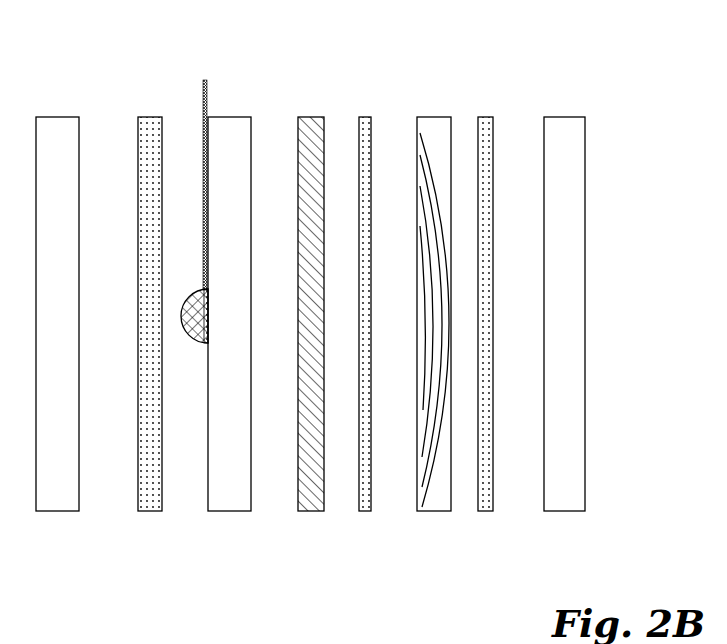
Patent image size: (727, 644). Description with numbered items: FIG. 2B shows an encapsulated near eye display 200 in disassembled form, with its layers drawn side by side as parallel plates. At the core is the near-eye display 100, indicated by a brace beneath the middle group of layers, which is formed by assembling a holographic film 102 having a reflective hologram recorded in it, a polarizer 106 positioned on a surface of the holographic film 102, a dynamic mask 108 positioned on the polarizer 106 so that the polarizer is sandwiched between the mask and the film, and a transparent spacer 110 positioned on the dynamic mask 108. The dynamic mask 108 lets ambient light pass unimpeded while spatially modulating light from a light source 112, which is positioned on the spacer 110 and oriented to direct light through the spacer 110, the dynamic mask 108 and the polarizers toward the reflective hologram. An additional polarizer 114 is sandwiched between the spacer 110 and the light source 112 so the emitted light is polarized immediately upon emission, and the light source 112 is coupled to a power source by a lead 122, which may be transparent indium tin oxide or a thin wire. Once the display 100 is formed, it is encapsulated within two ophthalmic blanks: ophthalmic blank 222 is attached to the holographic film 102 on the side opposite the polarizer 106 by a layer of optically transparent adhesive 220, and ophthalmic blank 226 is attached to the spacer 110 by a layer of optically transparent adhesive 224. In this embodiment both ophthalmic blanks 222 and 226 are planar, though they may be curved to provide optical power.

The encapsulated near eye display 200 is at (598, 89).
The ophthalmic blank 226 is at (57, 127).
The layer of optically transparent adhesive 224 is at (149, 501).
The lead 122 is at (202, 90).
The transparent spacer 110 is at (233, 131).
The light source 112 is at (190, 300).
The polarizer 114 is at (204, 346).
The dynamic mask 108 is at (313, 500).
The polarizer 106 is at (365, 118).
The holographic film 102 is at (442, 338).
The layer of optically transparent adhesive 220 is at (486, 126).
The ophthalmic blank 222 is at (564, 503).
The near-eye display 100 is at (317, 341).